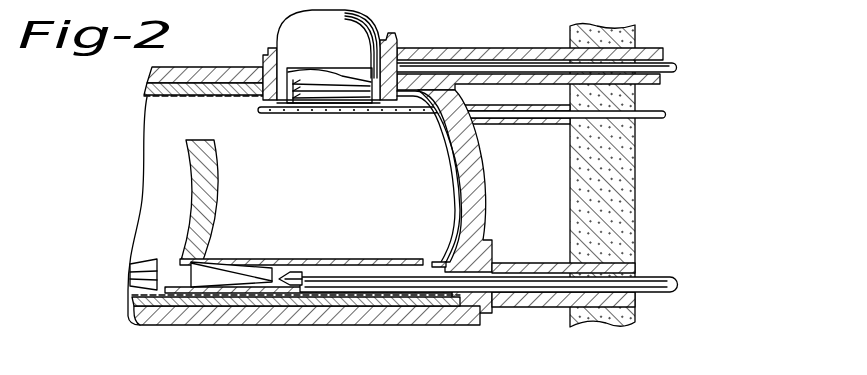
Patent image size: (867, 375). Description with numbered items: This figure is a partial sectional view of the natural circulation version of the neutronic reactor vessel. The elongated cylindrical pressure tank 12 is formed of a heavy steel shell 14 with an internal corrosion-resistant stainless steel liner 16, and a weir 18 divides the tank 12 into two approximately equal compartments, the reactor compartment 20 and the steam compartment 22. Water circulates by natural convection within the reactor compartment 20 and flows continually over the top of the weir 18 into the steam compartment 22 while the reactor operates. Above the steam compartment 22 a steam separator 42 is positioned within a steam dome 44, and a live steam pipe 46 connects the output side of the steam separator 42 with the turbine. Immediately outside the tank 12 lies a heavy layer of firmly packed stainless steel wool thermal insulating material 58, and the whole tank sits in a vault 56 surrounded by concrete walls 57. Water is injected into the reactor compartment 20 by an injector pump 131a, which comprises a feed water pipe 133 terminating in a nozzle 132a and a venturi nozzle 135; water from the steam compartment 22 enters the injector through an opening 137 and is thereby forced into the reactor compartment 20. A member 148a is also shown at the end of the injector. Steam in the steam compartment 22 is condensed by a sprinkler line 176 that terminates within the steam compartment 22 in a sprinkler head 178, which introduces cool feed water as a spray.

The pressure tank 12 is at (445, 152).
The shell 14 is at (468, 199).
The liner 16 is at (452, 187).
The weir 18 is at (205, 168).
The reactor compartment 20 is at (174, 160).
The steam compartment 22 is at (354, 161).
The steam separator 42 is at (303, 72).
The steam dome 44 is at (362, 36).
The live steam pipe 46 is at (677, 65).
The vault 56 is at (540, 167).
The concrete walls 57 is at (624, 179).
The thermal insulating material 58 is at (352, 326).
The injector pump 131a is at (312, 258).
The nozzle 132a is at (292, 286).
The feed water pipe 133 is at (645, 281).
The venturi nozzle 135 is at (212, 266).
The opening 137 is at (440, 262).
The funnel member 148a is at (128, 273).
The sprinkler line 176 is at (655, 113).
The sprinkler head 178 is at (368, 114).